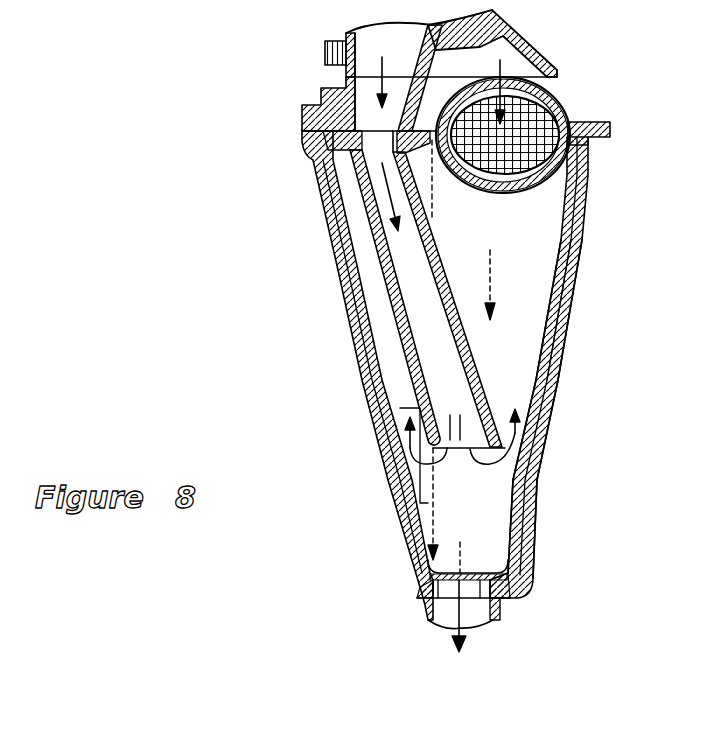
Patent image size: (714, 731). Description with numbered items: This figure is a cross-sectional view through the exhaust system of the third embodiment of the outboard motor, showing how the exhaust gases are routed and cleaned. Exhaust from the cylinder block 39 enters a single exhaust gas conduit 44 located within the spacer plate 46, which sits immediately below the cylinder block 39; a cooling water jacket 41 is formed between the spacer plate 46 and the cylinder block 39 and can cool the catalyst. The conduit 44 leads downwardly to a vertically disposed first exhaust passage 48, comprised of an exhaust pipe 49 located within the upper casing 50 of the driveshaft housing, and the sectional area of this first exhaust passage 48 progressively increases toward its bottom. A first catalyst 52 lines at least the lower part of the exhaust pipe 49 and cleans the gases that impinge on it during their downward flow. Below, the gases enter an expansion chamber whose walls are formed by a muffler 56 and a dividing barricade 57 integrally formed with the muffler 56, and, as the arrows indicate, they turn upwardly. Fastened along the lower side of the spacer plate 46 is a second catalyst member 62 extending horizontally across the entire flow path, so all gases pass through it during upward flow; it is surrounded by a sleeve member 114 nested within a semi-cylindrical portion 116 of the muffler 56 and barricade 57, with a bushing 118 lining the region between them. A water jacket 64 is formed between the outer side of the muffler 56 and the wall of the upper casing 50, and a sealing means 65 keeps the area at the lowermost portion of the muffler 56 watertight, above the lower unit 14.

The lower unit 14 is at (427, 618).
The cylinder block 39 is at (427, 69).
The cooling water jacket 41 is at (505, 57).
The exhaust gas conduit 44 is at (363, 100).
The spacer plate 46 is at (332, 125).
The first exhaust passage 48 is at (372, 292).
The exhaust pipe 49 is at (403, 359).
The upper casing 50 is at (572, 295).
The first catalyst 52 is at (392, 412).
The muffler 56 is at (548, 420).
The dividing barricade 57 is at (503, 515).
The second catalyst member 62 is at (540, 87).
The water jacket 64 is at (557, 360).
The sealing means 65 is at (512, 603).
The sleeve member 114 is at (570, 110).
The semi-cylindrical portion 116 is at (487, 184).
The bushing 118 is at (593, 160).